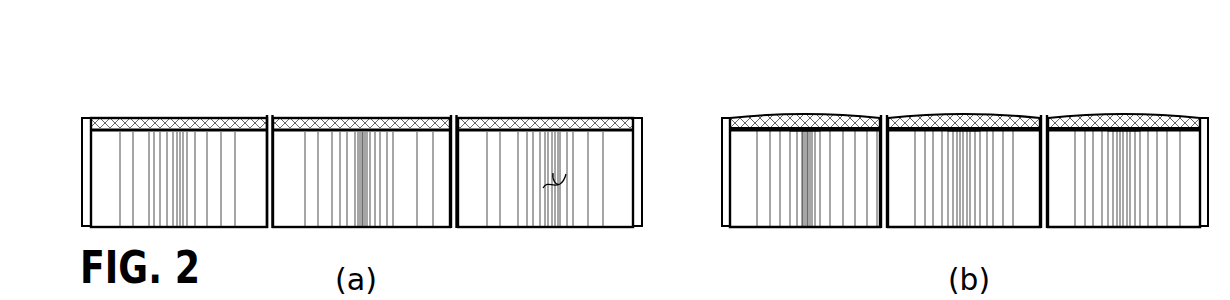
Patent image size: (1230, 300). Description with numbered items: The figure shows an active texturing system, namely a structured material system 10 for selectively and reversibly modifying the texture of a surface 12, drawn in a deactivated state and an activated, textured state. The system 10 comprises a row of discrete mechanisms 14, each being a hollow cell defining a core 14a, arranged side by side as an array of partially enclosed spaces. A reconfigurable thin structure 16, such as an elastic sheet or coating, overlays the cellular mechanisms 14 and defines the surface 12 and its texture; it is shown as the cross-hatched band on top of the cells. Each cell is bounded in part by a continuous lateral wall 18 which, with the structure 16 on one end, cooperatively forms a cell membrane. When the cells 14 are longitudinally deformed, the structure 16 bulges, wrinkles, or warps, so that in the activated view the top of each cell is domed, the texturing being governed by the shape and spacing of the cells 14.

The structured material system 10 is at (119, 88).
The surface 12 is at (267, 108).
The discrete mechanism 14 is at (802, 245).
The core 14a is at (553, 173).
The reconfigurable thin structure 16 is at (407, 127).
The continuous lateral wall 18 is at (883, 182).